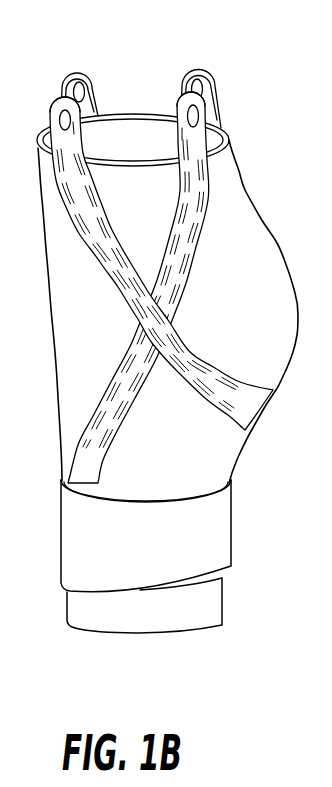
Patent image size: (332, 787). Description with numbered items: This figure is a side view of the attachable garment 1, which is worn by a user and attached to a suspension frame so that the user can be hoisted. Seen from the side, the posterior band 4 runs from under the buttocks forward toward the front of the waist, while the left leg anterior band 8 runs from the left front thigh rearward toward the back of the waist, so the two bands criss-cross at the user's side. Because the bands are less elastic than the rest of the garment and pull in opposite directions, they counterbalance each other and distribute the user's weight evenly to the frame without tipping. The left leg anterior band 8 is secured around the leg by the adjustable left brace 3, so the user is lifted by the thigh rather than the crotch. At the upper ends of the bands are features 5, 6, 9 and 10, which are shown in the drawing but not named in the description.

The attachable garment 1 is at (246, 193).
The left brace 3 is at (85, 541).
The posterior band 4 is at (231, 395).
The front attachment loop 5 is at (62, 142).
The rear attachment loop 6 is at (86, 98).
The left leg anterior band 8 is at (92, 442).
The rear attachment loop 9 is at (200, 84).
The front attachment loop 10 is at (204, 119).